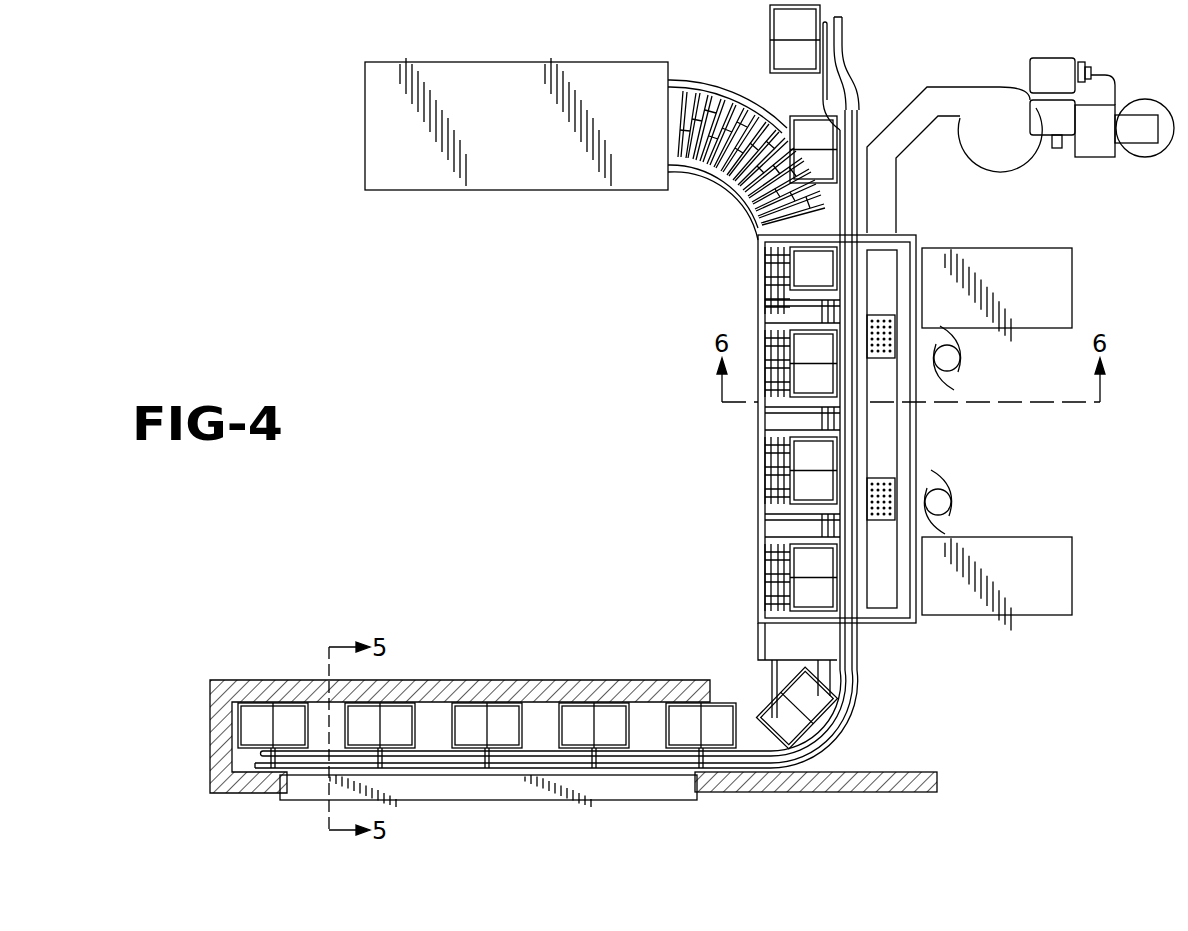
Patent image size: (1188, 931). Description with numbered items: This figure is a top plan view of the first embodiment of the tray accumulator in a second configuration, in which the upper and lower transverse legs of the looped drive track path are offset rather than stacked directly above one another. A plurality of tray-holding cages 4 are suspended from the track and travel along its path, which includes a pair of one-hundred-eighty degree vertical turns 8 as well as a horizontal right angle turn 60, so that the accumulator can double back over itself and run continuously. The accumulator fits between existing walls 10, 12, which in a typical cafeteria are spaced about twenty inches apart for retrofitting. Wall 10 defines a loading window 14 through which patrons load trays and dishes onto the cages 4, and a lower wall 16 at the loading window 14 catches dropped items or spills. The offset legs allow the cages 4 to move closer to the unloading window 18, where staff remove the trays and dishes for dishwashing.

The tray-holding cage 4 is at (765, 18).
The 180 degree turn 8 is at (852, 36).
The wall 10 is at (248, 790).
The wall 12 is at (292, 688).
The loading window 14 is at (510, 782).
The lower wall 16 is at (540, 737).
The unloading window 18 is at (862, 427).
The horizontal right angle turn 60 is at (864, 733).